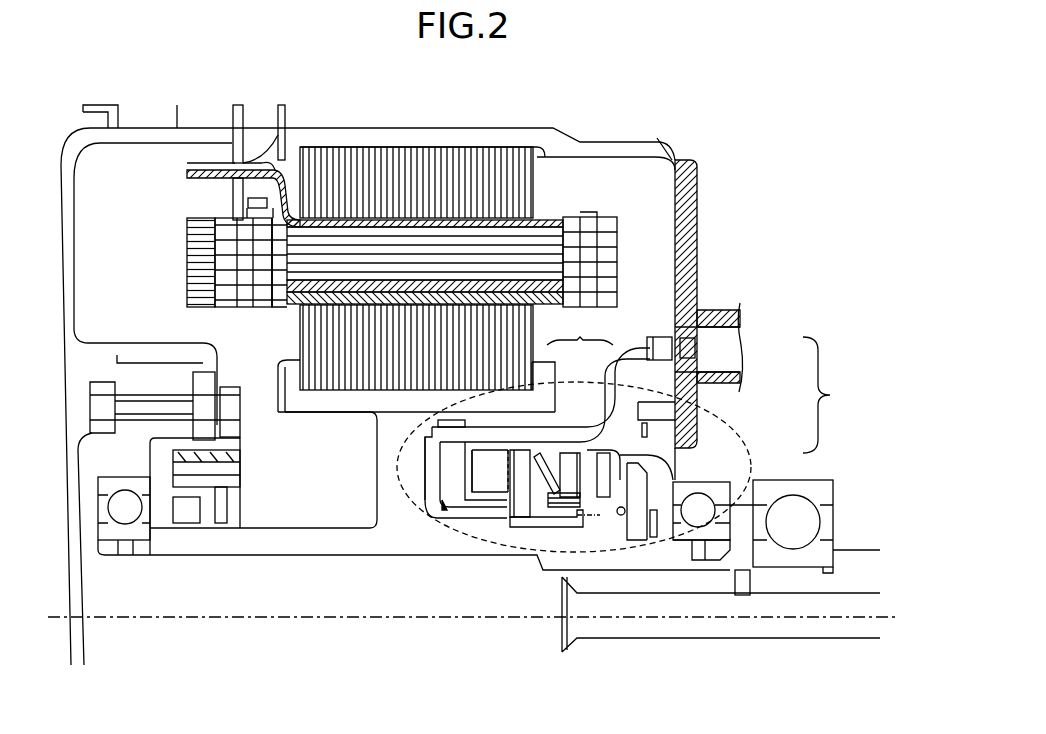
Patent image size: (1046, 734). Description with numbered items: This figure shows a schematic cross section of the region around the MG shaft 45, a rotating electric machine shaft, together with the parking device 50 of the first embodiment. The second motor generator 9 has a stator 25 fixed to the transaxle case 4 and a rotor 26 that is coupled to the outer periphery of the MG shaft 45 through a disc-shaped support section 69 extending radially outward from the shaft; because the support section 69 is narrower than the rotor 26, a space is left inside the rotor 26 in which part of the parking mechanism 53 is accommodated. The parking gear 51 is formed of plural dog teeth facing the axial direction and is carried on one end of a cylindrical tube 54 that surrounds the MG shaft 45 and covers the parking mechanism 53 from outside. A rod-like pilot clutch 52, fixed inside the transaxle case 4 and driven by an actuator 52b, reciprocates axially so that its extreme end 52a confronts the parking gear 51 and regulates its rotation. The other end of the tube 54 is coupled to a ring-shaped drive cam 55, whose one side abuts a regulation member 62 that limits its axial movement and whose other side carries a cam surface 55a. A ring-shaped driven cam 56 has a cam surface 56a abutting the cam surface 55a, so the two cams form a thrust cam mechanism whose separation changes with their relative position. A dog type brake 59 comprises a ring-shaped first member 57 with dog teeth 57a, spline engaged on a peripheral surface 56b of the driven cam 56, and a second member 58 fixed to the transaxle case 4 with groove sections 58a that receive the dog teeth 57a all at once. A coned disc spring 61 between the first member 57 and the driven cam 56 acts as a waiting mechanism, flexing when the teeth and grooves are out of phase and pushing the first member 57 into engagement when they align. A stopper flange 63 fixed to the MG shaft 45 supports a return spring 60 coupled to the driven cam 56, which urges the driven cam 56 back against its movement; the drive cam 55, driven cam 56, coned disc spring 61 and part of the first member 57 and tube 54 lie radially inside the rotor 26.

The transaxle case 4 is at (620, 150).
The second motor generator 9 is at (470, 143).
The stator 25 is at (400, 165).
The rotor 26 is at (313, 333).
The MG shaft 45 is at (285, 542).
The parking device 50 is at (832, 395).
The parking gear 51 is at (700, 382).
The pilot clutch 52 is at (692, 350).
The extreme end 52a is at (660, 357).
The actuator 52b is at (718, 335).
The parking mechanism 53 is at (745, 483).
The tube 54 is at (580, 437).
The drive cam 55 is at (447, 481).
The cam surface 55a is at (477, 482).
The driven cam 56 is at (520, 512).
The cam surface 56a is at (493, 483).
The peripheral surface 56b is at (553, 527).
The first member 57 is at (563, 452).
The dog teeth 57a is at (566, 508).
The second member 58 is at (623, 450).
The groove sections 58a is at (603, 498).
The dog type brake 59 is at (580, 329).
The return spring 60 is at (621, 516).
The coned disc spring 61 is at (545, 490).
The regulation member 62 is at (432, 490).
The stopper flange 63 is at (637, 523).
The support section 69 is at (380, 433).